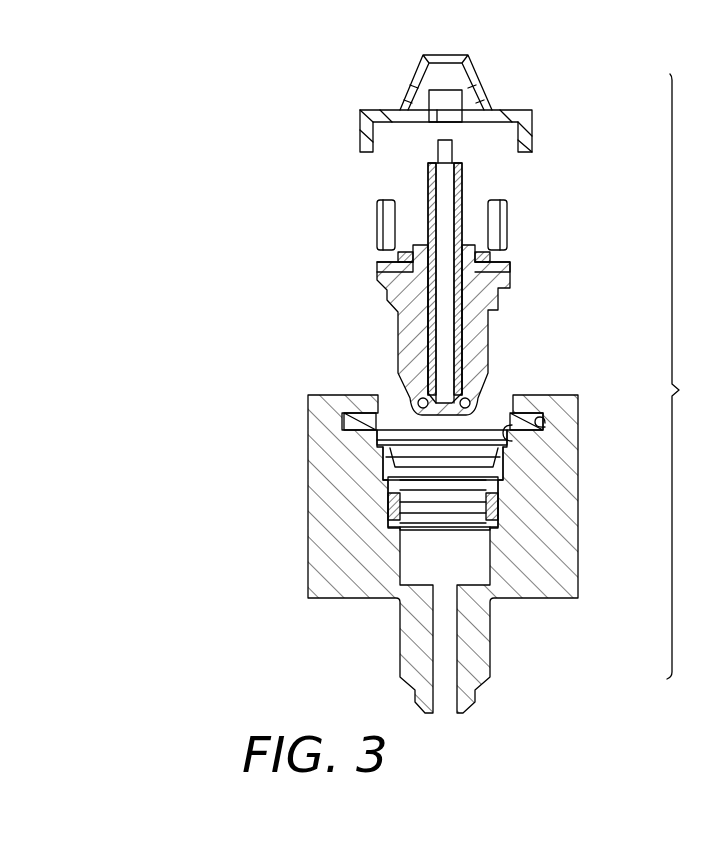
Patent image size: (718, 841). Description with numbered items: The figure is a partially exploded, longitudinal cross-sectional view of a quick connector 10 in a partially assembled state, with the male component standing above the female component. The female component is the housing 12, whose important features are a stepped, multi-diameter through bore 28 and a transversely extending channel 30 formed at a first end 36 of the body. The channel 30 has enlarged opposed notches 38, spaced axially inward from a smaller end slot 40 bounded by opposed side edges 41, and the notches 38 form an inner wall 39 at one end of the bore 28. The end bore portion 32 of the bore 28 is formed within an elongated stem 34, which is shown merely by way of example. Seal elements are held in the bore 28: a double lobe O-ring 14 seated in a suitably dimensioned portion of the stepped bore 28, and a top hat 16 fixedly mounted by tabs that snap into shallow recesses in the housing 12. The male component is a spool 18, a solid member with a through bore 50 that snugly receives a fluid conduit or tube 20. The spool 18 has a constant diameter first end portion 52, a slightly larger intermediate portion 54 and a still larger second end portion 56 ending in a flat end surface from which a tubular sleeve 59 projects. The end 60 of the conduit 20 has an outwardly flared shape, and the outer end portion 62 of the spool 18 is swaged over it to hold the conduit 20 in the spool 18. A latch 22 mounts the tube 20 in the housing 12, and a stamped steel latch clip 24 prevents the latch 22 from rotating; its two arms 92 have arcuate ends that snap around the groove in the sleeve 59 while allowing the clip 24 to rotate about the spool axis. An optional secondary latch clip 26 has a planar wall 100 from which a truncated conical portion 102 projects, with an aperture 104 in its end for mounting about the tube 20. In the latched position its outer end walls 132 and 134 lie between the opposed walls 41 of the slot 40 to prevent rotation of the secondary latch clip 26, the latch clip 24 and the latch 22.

The quick connector 10 is at (690, 376).
The housing 12 is at (278, 468).
The O-ring 14 is at (390, 513).
The top hat 16 is at (387, 480).
The spool 18 is at (293, 298).
The fluid conduit or tube 20 is at (427, 182).
The latch 22 is at (373, 262).
The latch clip 24 is at (373, 212).
The secondary latch clip 26 is at (337, 60).
The through bore 28 is at (413, 565).
The channel 30 is at (372, 422).
The end bore portion 32 is at (440, 637).
The elongated stem 34 is at (483, 637).
The first end 36 is at (333, 392).
The notches 38 is at (540, 427).
The inner wall 39 is at (510, 433).
The slot 40 is at (397, 413).
The side edges 41 is at (383, 390).
The through bore 50 is at (455, 298).
The first end portion 52 is at (488, 342).
The intermediate portion 54 is at (387, 296).
The second end portion 56 is at (510, 272).
The tubular sleeve 59 is at (480, 223).
The end of the conduit 60 is at (480, 393).
The outer end portion 62 is at (395, 407).
The arms 92 is at (497, 242).
The planar wall 100 is at (385, 110).
The truncated conical portion 102 is at (418, 72).
The aperture 104 is at (463, 56).
The outer end wall 132 is at (360, 132).
The outer end wall 134 is at (570, 130).